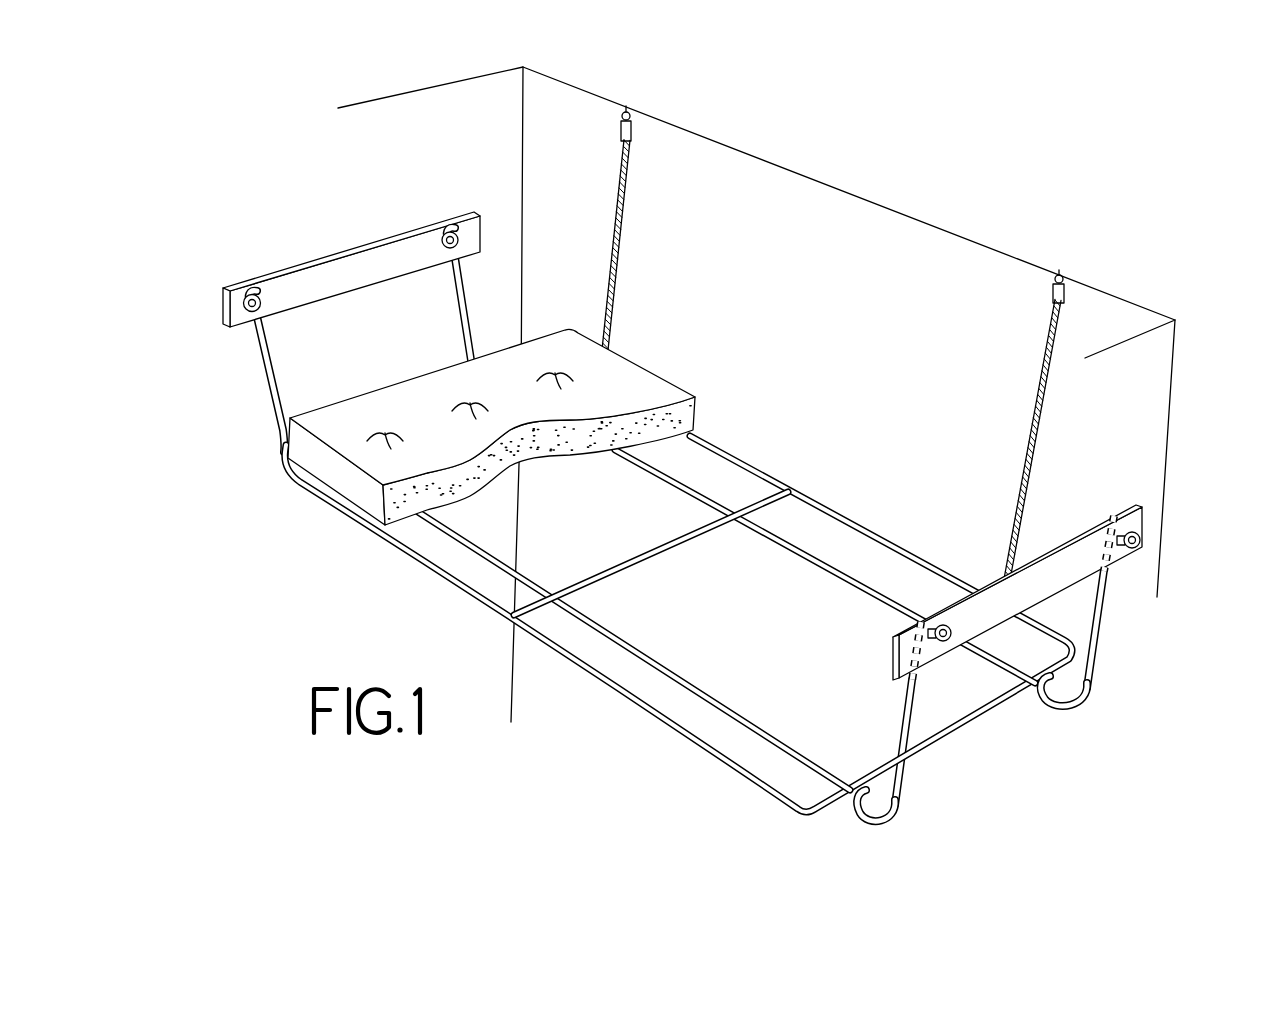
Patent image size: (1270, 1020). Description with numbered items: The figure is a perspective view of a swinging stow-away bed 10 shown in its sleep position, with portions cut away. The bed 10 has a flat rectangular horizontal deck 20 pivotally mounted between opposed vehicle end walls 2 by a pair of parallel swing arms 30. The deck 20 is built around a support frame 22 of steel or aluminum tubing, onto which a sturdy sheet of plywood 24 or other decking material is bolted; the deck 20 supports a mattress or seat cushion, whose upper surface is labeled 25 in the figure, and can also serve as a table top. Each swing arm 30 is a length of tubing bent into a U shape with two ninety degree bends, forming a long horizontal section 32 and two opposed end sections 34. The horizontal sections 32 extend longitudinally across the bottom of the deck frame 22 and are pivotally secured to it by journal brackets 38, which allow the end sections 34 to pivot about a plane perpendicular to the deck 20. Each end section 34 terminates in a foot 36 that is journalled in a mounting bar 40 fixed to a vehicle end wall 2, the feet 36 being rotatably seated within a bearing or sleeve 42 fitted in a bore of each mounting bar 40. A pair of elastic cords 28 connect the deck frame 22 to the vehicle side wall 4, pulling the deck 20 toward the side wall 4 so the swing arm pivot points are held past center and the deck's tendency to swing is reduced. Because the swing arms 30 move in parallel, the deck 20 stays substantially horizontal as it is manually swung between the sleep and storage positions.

The vehicle end wall 2 is at (417, 110).
The vehicle side wall 4 is at (900, 242).
The stow-away bed 10 is at (255, 535).
The deck 20 is at (869, 534).
The support frame 22 is at (757, 470).
The sheet of plywood 24 is at (552, 421).
The cushion top surface 25 is at (648, 390).
The elastic cord 28 is at (622, 240).
The swing arm 30 is at (725, 620).
The horizontal section 32 is at (688, 685).
The end section 34 is at (475, 315).
The foot 36 is at (462, 238).
The journal bracket 38 is at (1036, 700).
The mounting bar 40 is at (350, 265).
The bearing or sleeve 42 is at (255, 292).